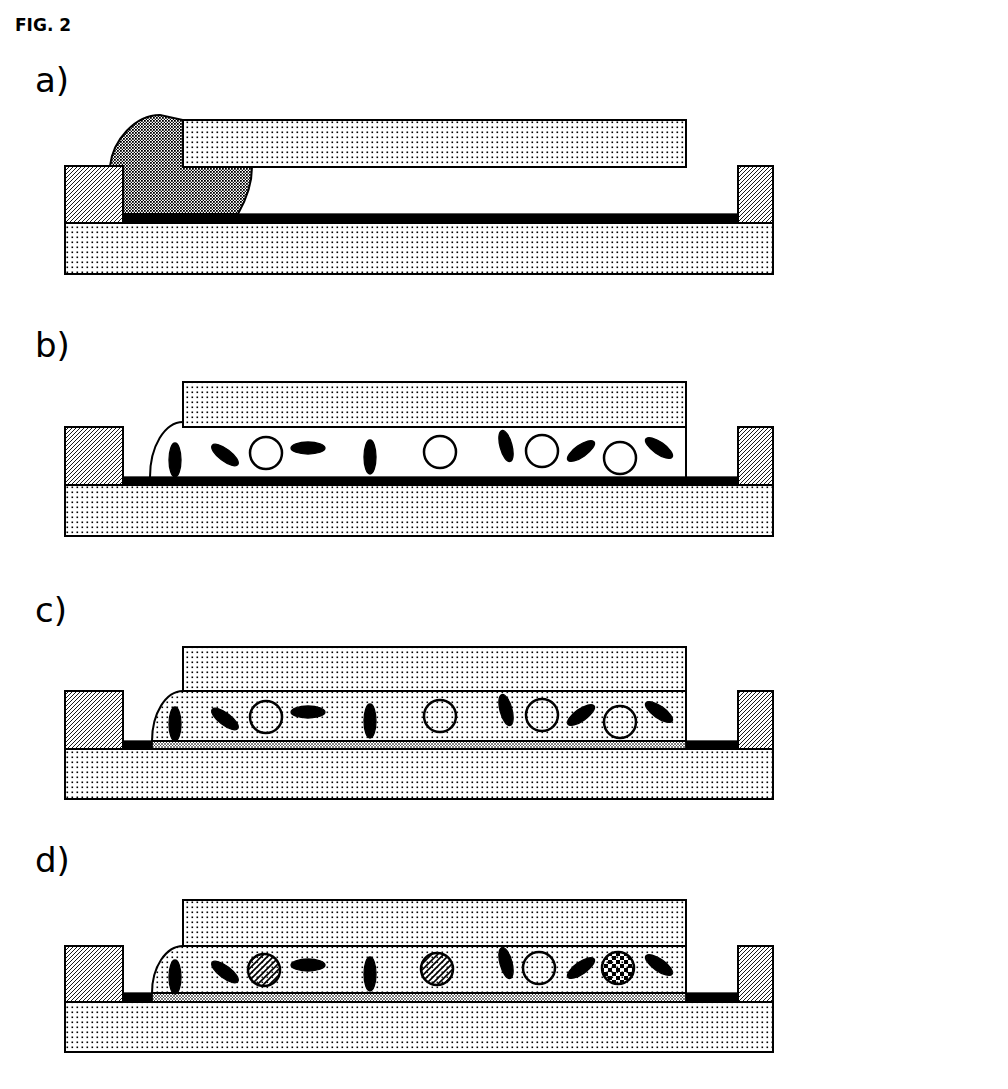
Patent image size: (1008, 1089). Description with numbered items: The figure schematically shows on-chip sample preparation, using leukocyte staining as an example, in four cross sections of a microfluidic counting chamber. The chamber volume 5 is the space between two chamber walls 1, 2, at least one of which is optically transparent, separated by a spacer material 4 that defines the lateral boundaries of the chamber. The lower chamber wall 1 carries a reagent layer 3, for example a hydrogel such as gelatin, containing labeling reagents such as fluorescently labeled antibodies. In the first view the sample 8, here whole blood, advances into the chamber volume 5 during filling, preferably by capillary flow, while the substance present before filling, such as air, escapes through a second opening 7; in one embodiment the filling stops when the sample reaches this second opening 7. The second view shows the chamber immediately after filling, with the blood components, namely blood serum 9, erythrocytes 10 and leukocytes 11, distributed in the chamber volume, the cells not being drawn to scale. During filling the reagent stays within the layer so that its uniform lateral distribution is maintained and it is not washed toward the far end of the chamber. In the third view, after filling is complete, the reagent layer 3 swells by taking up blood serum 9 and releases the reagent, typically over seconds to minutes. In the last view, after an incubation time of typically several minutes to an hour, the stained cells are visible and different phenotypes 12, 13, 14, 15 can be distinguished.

The chamber wall 1 is at (406, 638).
The chamber wall 2 is at (434, 514).
The reagent layer 3 is at (430, 214).
The spacer material 4 is at (419, 561).
The chamber volume 5 is at (462, 191).
The second opening 7 is at (712, 561).
The sample 8 is at (181, 146).
The blood serum 9 is at (393, 450).
The erythrocytes 10 is at (367, 453).
The leukocytes 11 is at (452, 441).
The phenotype 12 is at (540, 952).
The phenotype 13 is at (264, 953).
The phenotype 14 is at (450, 958).
The phenotype 15 is at (617, 952).